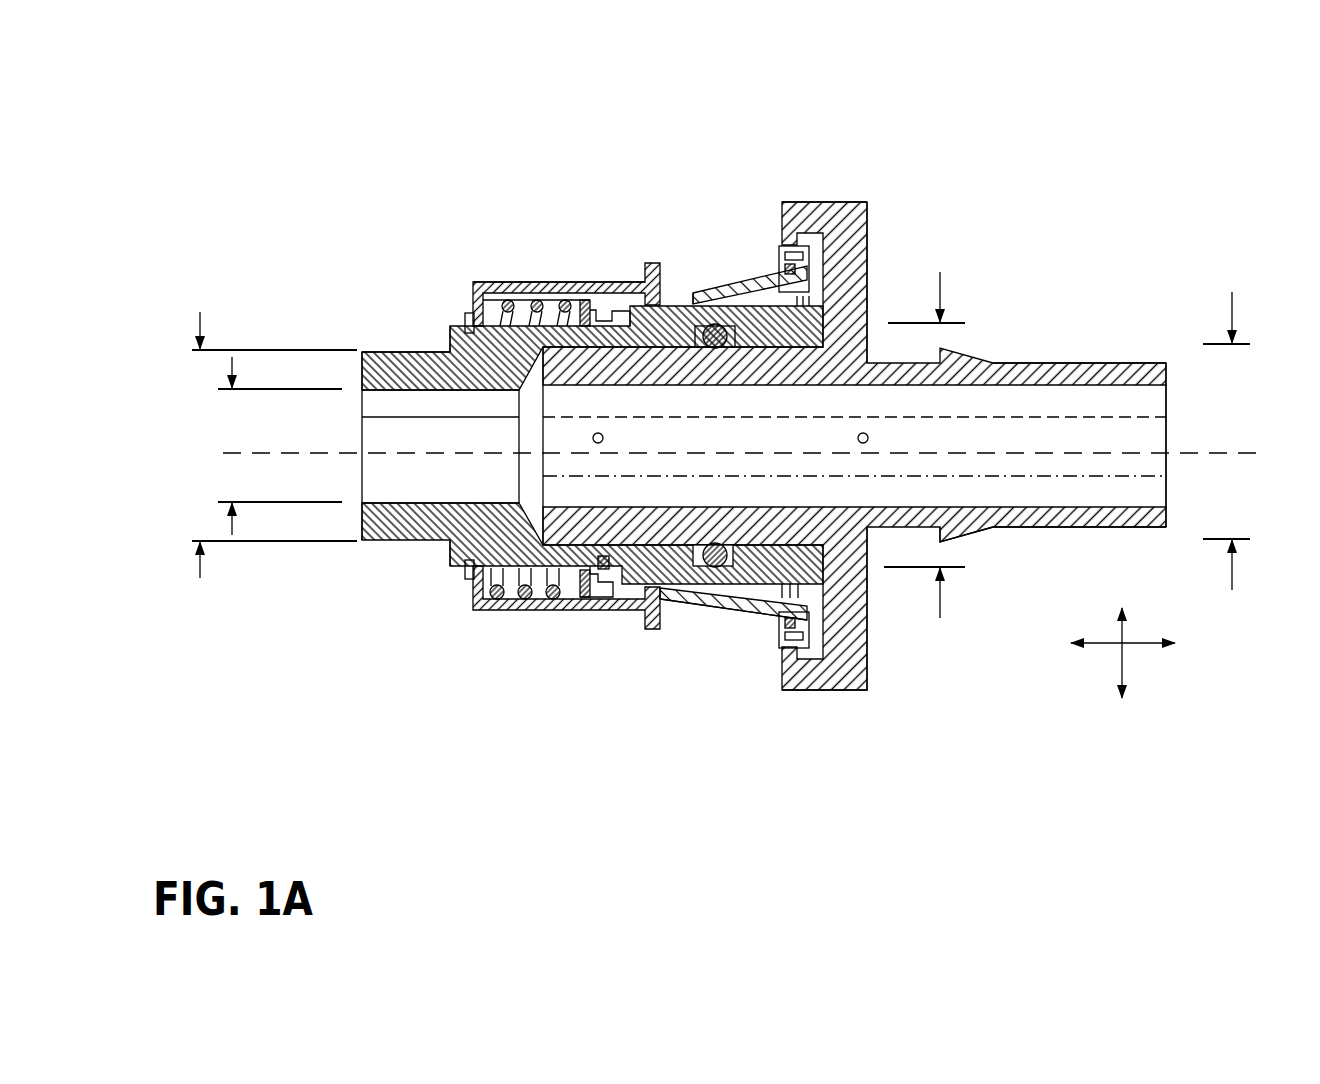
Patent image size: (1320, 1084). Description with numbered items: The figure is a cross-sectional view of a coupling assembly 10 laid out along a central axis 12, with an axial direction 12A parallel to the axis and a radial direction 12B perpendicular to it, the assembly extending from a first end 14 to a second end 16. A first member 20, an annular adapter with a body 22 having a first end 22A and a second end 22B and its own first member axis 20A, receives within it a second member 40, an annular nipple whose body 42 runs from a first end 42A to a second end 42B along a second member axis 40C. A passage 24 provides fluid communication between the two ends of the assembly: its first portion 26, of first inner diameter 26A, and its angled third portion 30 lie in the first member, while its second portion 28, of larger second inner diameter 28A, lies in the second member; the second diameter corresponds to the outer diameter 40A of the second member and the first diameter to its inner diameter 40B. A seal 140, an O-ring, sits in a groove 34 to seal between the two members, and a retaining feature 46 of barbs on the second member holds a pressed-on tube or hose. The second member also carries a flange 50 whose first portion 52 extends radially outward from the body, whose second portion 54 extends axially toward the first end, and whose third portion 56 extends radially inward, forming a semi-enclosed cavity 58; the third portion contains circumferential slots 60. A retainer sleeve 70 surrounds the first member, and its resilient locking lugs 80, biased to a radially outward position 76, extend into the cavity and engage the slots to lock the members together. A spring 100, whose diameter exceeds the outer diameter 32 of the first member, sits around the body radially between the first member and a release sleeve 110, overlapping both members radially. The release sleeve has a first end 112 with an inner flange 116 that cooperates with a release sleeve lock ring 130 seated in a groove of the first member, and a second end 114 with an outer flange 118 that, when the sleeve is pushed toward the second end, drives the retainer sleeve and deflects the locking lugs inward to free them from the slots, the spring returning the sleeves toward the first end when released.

The coupling assembly 10 is at (962, 156).
The central axis 12 is at (1176, 443).
The axial direction 12A is at (1149, 661).
The radial direction 12B is at (1135, 622).
The first end 14 is at (346, 281).
The second end 16 is at (1249, 236).
The first member 20 is at (448, 325).
The first member axis 20A is at (857, 334).
The body 22 is at (376, 523).
The first end 22A is at (356, 339).
The second end 22B is at (806, 326).
The passage 24 is at (353, 495).
The first portion 26 is at (385, 475).
The first inner diameter 26A is at (235, 520).
The second portion 28 is at (1168, 500).
The second inner diameter 28A is at (202, 583).
The third portion 30 is at (540, 437).
The outer diameter 32 is at (924, 595).
The groove 34 is at (692, 600).
The second member 40 is at (1045, 361).
The outer diameter 40A is at (1217, 441).
The inner diameter 40B is at (268, 528).
The second member axis 40C is at (880, 363).
The body 42 is at (400, 348).
The first end 42A is at (452, 552).
The second end 42B is at (1120, 531).
The retaining feature 46 is at (983, 541).
The flange 50 is at (877, 699).
The first portion 52 is at (870, 247).
The second portion 54 is at (823, 201).
The third portion 56 is at (779, 226).
The semi-enclosed cavity 58 is at (815, 647).
The circumferential slots 60 is at (769, 650).
The retainer sleeve 70 is at (725, 278).
The radially outward position 76 is at (690, 246).
The locking lug 80 is at (740, 614).
The spring 100 is at (537, 280).
The release sleeve 110 is at (578, 298).
The first end 112 is at (473, 274).
The second end 114 is at (627, 238).
The inner flange 116 is at (466, 297).
The outer flange 118 is at (650, 632).
The release sleeve lock ring 130 is at (459, 586).
The seal 140 is at (733, 559).